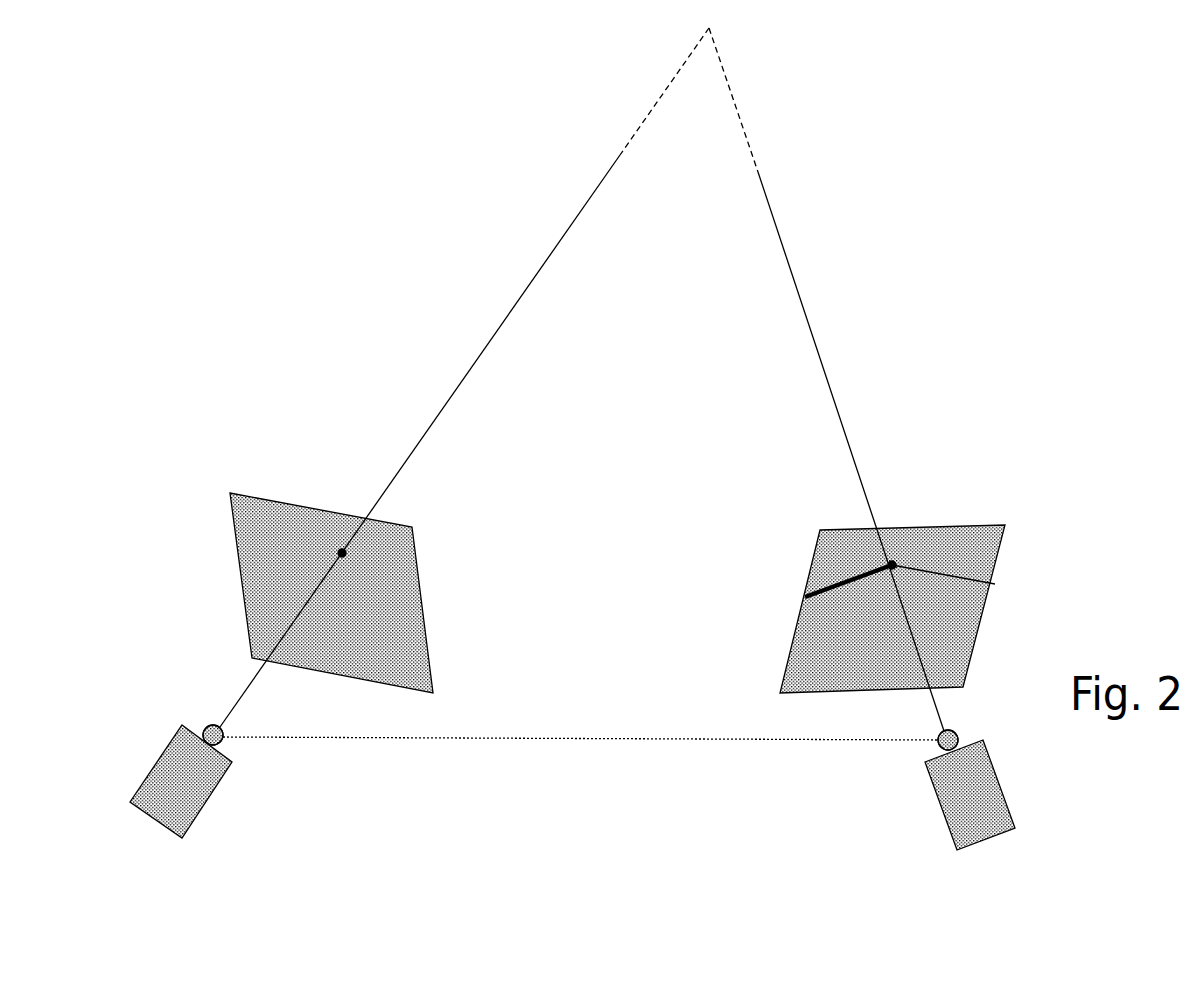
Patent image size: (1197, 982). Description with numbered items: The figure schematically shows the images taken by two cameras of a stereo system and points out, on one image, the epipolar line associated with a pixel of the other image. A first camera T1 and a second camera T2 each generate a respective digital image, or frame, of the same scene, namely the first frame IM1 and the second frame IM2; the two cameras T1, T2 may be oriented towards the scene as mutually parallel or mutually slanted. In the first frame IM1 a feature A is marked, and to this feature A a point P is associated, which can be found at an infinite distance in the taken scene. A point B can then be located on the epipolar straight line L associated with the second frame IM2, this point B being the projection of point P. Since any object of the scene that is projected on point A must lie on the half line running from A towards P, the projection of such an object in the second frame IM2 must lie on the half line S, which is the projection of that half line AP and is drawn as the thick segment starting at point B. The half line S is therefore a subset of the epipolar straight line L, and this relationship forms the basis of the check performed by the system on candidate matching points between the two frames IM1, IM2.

The point P is at (709, 28).
The feature A is at (318, 513).
The point B is at (922, 528).
The first frame IM1 is at (353, 593).
The second frame IM2 is at (844, 609).
The half line S is at (802, 570).
The epipolar straight line L is at (995, 584).
The first camera T1 is at (202, 798).
The second camera T2 is at (932, 797).